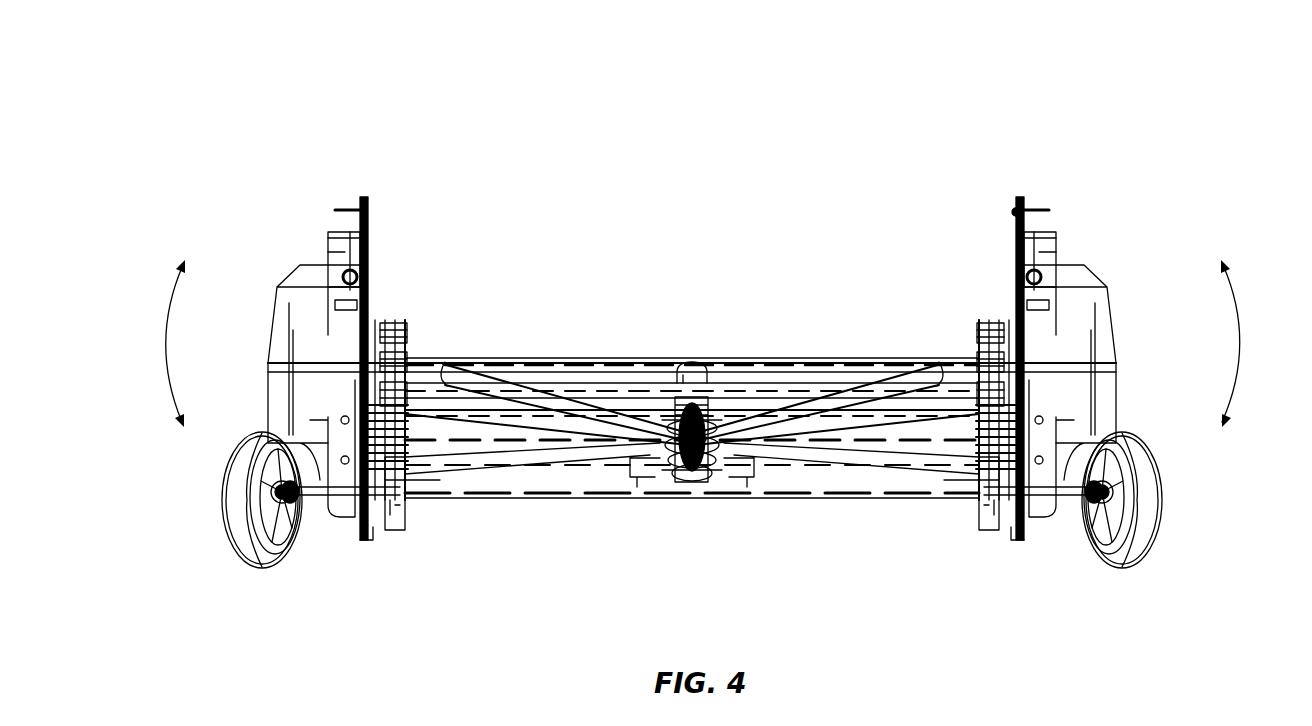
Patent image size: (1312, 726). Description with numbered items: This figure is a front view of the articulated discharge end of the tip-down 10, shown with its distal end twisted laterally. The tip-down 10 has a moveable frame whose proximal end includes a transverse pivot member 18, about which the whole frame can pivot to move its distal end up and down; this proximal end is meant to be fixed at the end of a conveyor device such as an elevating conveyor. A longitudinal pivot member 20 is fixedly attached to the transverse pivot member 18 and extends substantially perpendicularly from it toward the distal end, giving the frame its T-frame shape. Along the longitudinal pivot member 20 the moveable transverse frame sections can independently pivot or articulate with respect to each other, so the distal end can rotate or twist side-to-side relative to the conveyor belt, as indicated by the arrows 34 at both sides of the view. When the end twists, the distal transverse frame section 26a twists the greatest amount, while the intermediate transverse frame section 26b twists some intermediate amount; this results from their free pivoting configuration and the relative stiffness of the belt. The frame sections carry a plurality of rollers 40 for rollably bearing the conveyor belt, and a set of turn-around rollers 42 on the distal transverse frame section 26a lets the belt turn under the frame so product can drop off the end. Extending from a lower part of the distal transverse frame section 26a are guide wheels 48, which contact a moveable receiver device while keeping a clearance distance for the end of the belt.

The tip-down 10 is at (885, 167).
The transverse pivot member 18 is at (734, 360).
The longitudinal pivot member 20 is at (682, 362).
The distal transverse frame section 26a is at (642, 483).
The intermediate transverse frame section 26b is at (836, 440).
The arrows 34 is at (166, 334).
The rollers 40 is at (405, 387).
The turn-around rollers 42 is at (395, 520).
The guide wheels 48 is at (240, 533).